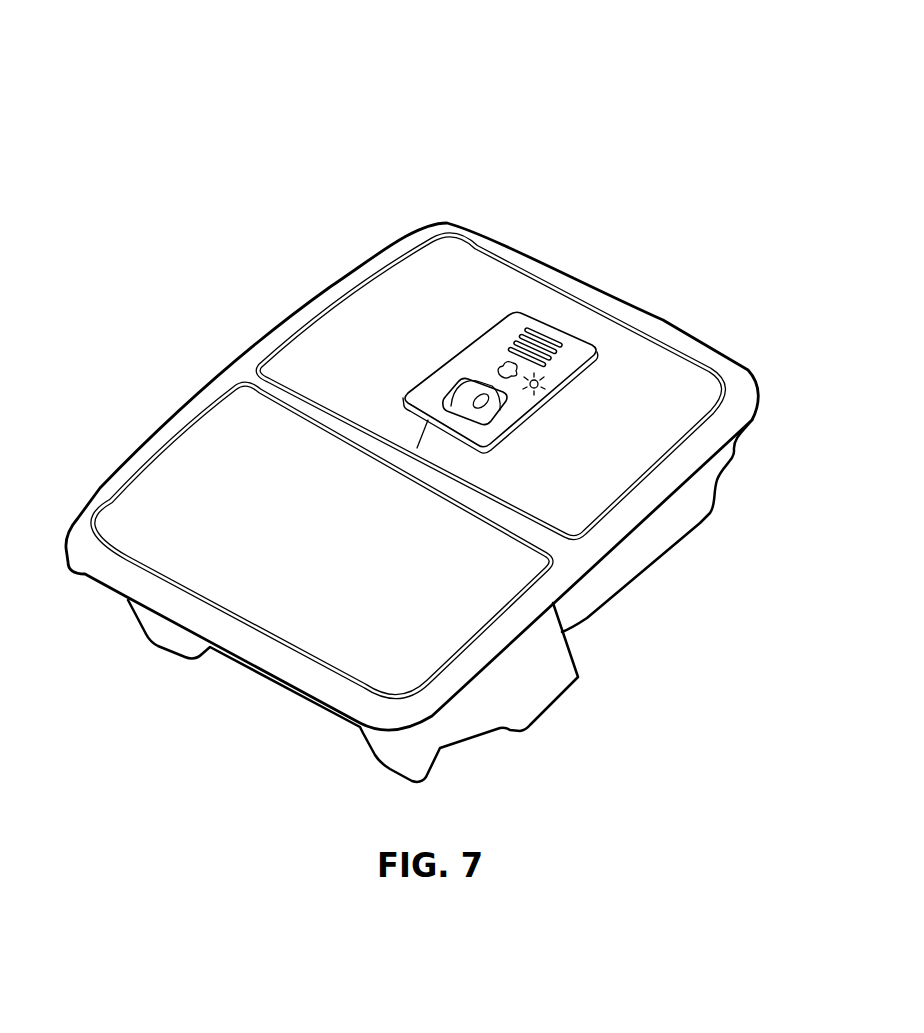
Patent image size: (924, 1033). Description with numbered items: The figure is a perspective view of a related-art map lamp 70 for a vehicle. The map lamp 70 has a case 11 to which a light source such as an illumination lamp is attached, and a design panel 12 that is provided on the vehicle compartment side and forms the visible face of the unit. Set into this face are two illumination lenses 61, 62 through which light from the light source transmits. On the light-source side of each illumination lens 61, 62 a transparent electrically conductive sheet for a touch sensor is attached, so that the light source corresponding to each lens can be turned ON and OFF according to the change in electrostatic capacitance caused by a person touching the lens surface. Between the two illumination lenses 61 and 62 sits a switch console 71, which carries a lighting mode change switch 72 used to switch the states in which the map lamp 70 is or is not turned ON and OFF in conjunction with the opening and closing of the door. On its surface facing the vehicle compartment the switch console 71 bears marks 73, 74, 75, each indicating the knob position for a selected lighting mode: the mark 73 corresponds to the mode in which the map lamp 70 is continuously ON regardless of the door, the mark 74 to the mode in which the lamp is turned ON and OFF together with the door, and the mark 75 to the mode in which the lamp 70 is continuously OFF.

The case 11 is at (683, 512).
The design panel 12 is at (750, 392).
The illumination lens 61 is at (567, 485).
The illumination lens 62 is at (327, 362).
The map lamp 70 is at (553, 197).
The switch console 71 is at (574, 354).
The lighting mode change switch 72 is at (465, 382).
The mark 73 is at (548, 380).
The mark 74 is at (512, 383).
The mark 75 is at (486, 336).